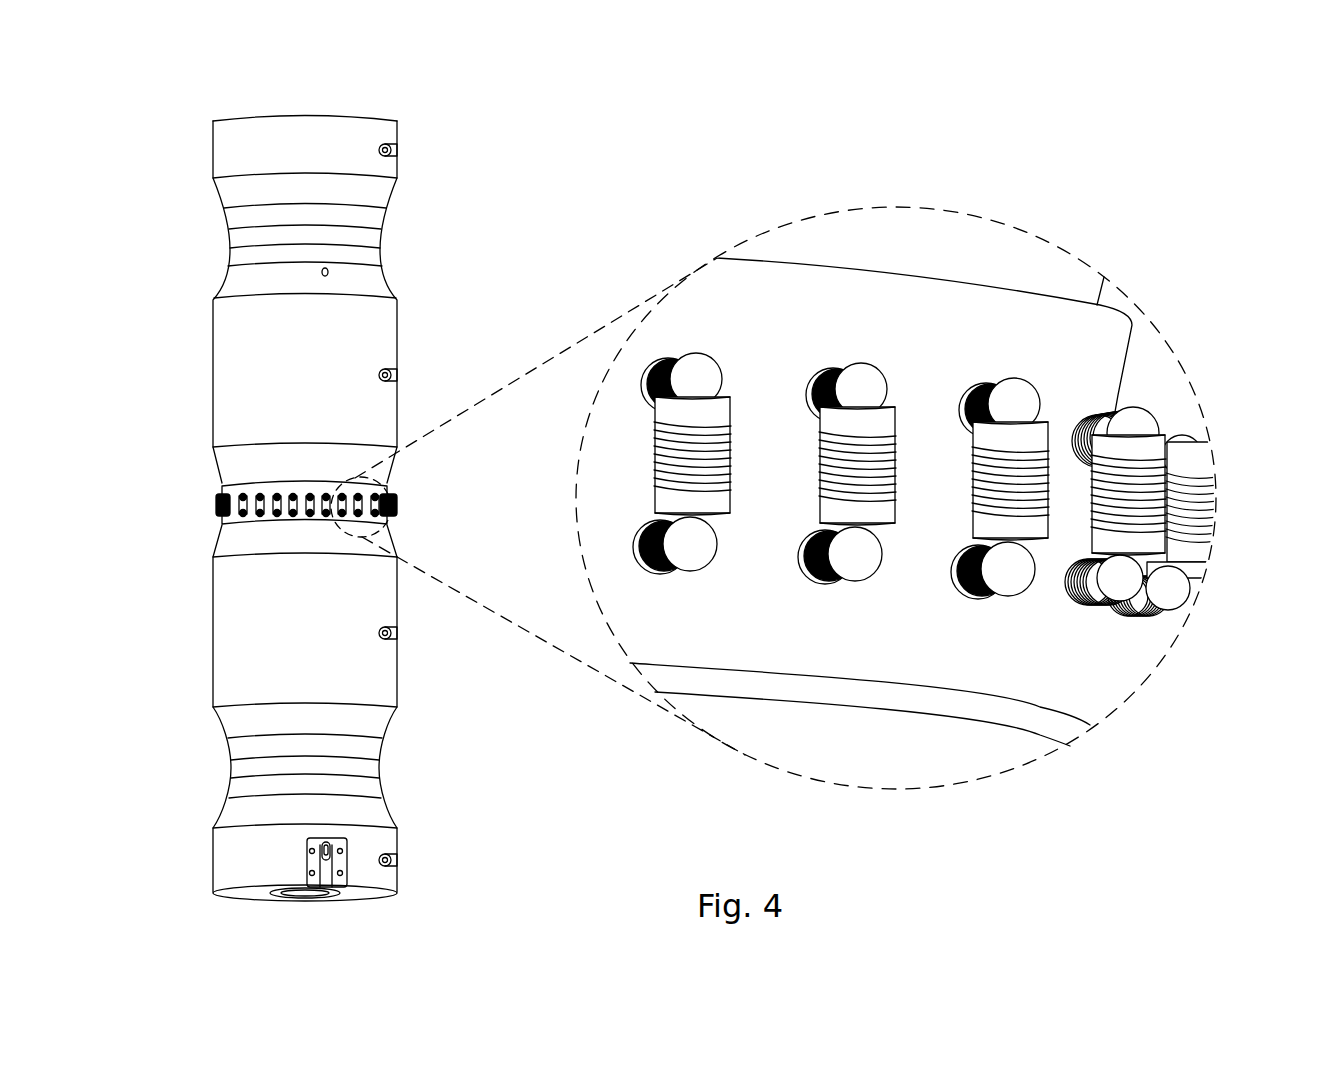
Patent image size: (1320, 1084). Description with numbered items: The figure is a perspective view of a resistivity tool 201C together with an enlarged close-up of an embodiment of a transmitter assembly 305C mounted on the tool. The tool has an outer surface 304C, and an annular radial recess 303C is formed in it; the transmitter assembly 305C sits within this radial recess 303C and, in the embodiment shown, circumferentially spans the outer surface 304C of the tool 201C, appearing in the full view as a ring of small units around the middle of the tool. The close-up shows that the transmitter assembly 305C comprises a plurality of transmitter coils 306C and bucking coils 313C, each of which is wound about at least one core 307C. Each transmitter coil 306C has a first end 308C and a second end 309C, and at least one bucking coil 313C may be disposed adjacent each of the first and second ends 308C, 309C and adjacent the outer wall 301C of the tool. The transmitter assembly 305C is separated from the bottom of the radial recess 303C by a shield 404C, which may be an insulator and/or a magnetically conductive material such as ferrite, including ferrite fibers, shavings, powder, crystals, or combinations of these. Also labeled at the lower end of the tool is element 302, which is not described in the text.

The resistivity tool 201C is at (186, 383).
The outer wall 301C is at (378, 396).
The transmitter assembly 305C is at (205, 513).
The outer surface 304C is at (207, 650).
The bottom connector ring 302 is at (305, 893).
The first end 308C is at (742, 392).
The second end 309C is at (732, 540).
The core 307C is at (1000, 425).
The bucking coil 313C is at (1142, 420).
The transmitter coil 306C is at (1067, 490).
The radial recess 303C is at (812, 717).
The shield 404C is at (903, 698).